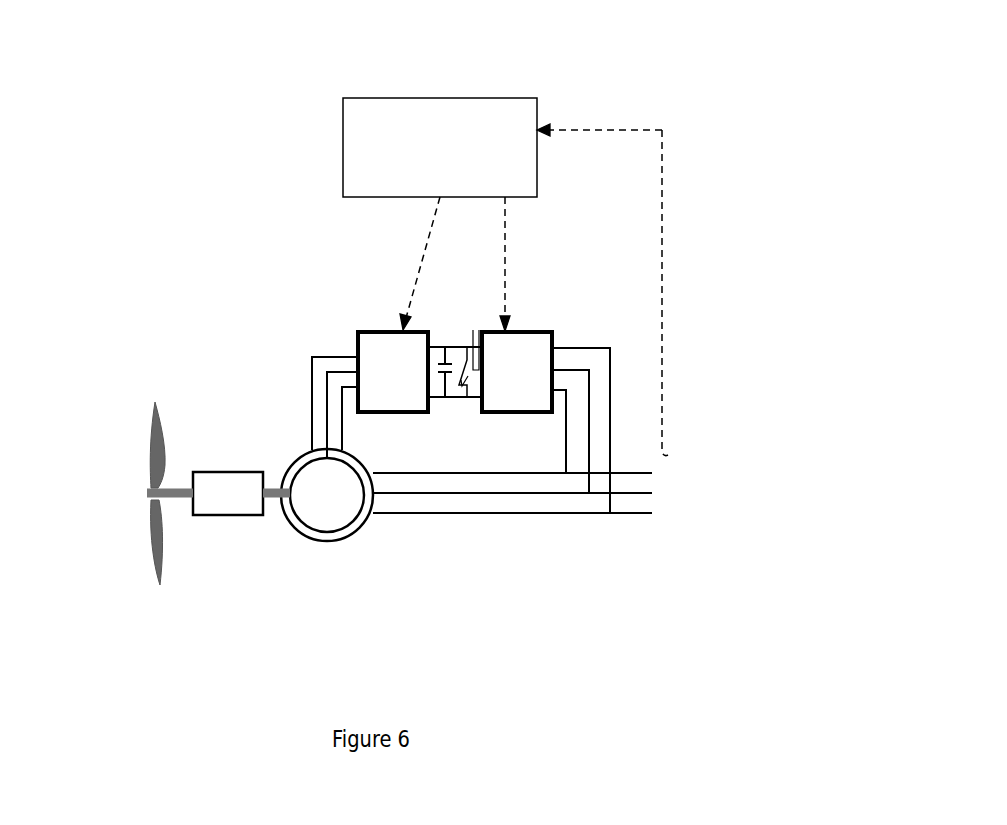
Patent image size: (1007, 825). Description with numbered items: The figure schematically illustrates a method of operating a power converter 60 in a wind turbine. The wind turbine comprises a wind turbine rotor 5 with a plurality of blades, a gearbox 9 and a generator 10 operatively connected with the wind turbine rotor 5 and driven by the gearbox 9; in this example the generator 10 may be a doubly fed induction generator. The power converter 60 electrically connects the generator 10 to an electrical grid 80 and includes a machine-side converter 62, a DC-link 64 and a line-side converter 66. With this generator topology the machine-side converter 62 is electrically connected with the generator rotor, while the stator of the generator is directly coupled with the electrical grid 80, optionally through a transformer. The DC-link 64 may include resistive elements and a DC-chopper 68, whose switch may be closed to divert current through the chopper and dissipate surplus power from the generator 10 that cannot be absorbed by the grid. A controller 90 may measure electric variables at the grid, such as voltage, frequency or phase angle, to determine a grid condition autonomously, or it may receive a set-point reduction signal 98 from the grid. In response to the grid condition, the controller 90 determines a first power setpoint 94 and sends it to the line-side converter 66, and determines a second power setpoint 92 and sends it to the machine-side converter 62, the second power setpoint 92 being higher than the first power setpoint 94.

The wind turbine rotor 5 is at (156, 514).
The gearbox 9 is at (219, 472).
The generator 10 is at (342, 556).
The power converter 60 is at (479, 451).
The machine-side converter 62 is at (362, 332).
The DC-link 64 is at (460, 347).
The line-side converter 66 is at (540, 332).
The DC-chopper 68 is at (462, 384).
The electrical grid 80 is at (535, 430).
The controller 90 is at (537, 112).
The second power setpoint 92 is at (419, 263).
The first power setpoint 94 is at (519, 264).
The set-point reduction signal 98 is at (621, 289).